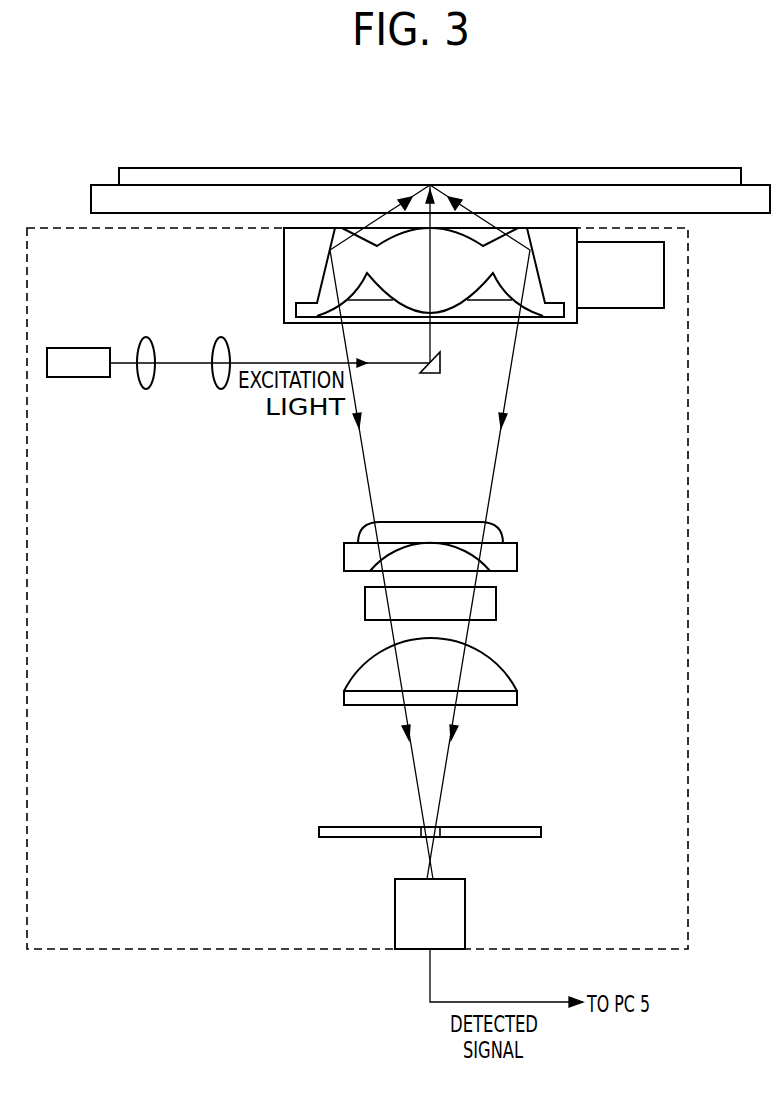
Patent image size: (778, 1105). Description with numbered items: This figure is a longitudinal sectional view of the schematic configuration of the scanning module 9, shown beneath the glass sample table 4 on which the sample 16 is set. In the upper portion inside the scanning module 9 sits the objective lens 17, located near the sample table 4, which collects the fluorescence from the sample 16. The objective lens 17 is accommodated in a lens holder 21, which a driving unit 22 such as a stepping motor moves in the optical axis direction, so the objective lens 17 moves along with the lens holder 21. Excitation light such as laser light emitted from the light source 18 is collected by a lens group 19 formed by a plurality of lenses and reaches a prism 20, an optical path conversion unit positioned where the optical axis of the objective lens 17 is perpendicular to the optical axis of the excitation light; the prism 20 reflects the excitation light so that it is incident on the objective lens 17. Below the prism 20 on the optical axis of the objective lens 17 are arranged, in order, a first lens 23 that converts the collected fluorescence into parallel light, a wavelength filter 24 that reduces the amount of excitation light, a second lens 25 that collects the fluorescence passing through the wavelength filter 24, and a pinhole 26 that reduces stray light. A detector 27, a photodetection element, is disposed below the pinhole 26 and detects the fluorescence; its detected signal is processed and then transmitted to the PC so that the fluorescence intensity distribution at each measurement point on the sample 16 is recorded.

The sample table 4 is at (91, 198).
The scanning module 9 is at (689, 575).
The sample 16 is at (200, 168).
The objective lens 17 is at (540, 272).
The light source 18 is at (74, 348).
The lens group 19 is at (230, 398).
The prism 20 is at (443, 368).
The lens holder 21 is at (284, 272).
The driving unit 22 is at (623, 308).
The first lens 23 is at (344, 560).
The wavelength filter 24 is at (365, 610).
The second lens 25 is at (344, 686).
The pinhole 26 is at (337, 827).
The detector 27 is at (395, 918).